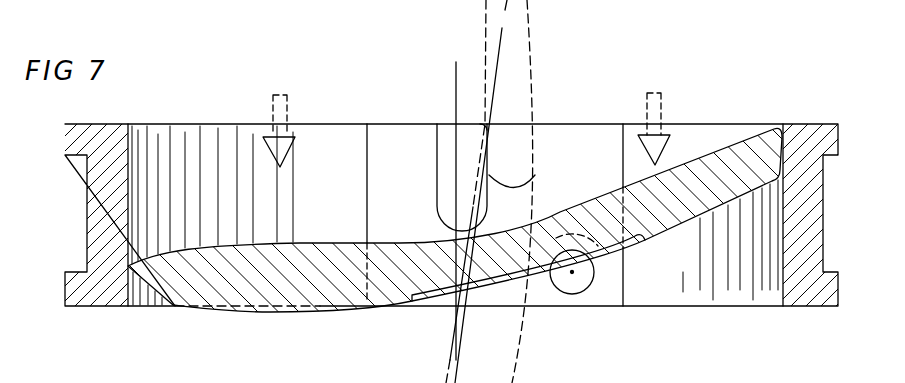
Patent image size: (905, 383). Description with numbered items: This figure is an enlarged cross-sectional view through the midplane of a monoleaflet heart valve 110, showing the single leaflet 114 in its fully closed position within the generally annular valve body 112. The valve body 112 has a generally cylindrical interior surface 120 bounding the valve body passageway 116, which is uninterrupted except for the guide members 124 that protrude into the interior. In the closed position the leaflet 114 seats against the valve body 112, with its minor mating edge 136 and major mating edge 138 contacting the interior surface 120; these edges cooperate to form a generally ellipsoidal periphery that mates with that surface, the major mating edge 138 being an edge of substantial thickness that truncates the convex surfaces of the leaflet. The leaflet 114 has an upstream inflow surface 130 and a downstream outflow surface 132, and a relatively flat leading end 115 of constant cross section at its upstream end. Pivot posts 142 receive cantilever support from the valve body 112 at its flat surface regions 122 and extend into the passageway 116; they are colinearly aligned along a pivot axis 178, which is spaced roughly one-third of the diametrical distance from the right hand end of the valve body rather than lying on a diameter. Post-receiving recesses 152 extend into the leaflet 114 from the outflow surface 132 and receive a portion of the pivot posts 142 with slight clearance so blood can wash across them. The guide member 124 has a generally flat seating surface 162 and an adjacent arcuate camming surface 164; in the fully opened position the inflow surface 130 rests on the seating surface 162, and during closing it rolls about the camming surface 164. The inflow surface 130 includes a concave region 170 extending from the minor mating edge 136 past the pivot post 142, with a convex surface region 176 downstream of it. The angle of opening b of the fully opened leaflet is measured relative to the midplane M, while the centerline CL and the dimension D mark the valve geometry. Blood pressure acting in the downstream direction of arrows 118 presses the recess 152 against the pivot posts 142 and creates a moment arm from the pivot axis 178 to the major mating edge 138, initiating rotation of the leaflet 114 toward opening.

The monoleaflet heart valve 110 is at (611, 122).
The valve body 112 is at (700, 128).
The leaflet 114 is at (522, 66).
The leading end 115 is at (741, 180).
The valve body passageway 116 is at (783, 282).
The arrows 118 is at (285, 108).
The interior surface 120 is at (164, 136).
The flat surface regions 122 is at (611, 152).
The guide members 124 is at (437, 130).
The inflow surface 130 is at (220, 245).
The outflow surface 132 is at (297, 313).
The minor mating edge 136 is at (784, 146).
The major mating edge 138 is at (128, 280).
The pivot posts 142 is at (580, 294).
The post-receiving recesses 152 is at (580, 235).
The seating surface 162 is at (488, 154).
The camming surface 164 is at (481, 232).
The concave region 170 is at (437, 240).
The convex surface region 176 is at (282, 243).
The pivot axis 178 is at (588, 290).
The center line CL is at (446, 81).
The direction line D is at (451, 10).
The midplane M is at (495, 83).
The angle of opening b is at (540, 183).